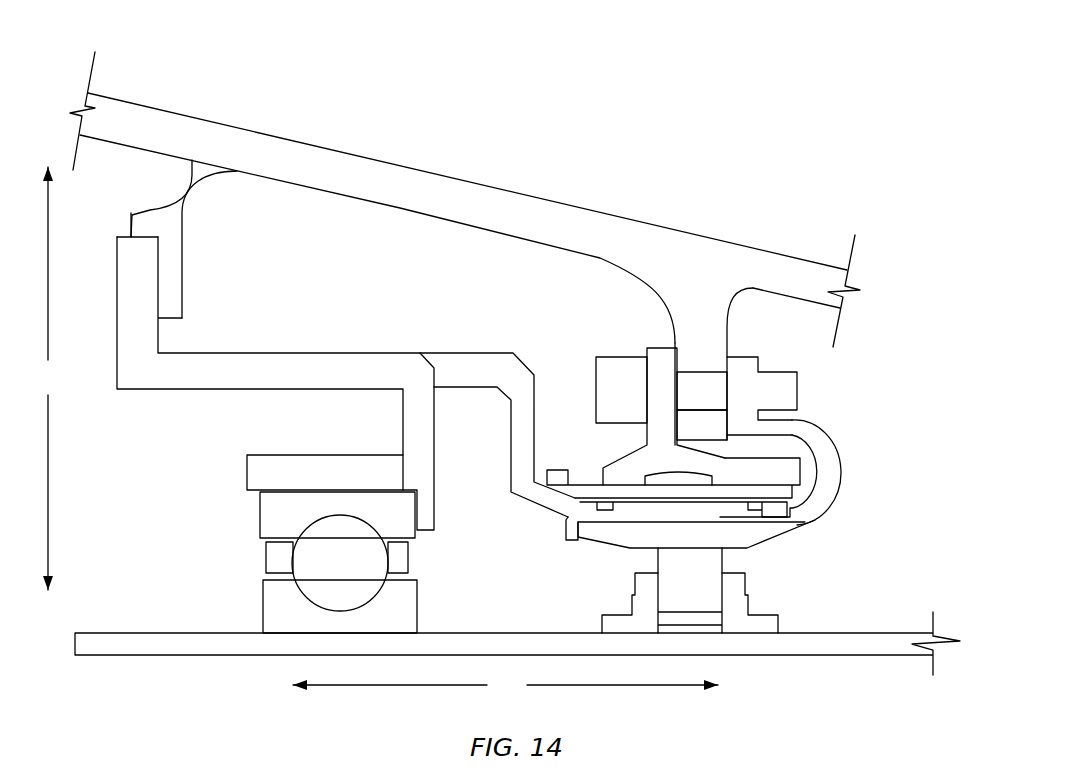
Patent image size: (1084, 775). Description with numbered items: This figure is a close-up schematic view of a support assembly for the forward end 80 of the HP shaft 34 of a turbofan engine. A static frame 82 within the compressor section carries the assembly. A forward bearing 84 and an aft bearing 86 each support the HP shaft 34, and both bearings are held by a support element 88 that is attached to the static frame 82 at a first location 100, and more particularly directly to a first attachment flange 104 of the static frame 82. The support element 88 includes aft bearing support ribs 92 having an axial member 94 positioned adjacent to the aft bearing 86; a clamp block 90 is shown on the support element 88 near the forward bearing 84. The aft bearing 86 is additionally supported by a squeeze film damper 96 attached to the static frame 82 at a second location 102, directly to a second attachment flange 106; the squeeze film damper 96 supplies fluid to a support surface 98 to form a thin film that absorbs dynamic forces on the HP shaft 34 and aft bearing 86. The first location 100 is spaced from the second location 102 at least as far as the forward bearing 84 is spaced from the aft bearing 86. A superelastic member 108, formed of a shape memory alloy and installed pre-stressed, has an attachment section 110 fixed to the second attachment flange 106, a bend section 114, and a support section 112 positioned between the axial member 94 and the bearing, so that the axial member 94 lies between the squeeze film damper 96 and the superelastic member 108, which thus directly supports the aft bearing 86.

The HP shaft 34 is at (785, 645).
The forward end 80 is at (207, 673).
The static frame 82 is at (488, 190).
The forward bearing 84 is at (254, 562).
The aft bearing 86 is at (806, 615).
The support element 88 is at (388, 296).
The clamp block 90 is at (383, 453).
The aft bearing support ribs 92 is at (525, 415).
The axial member 94 is at (572, 520).
The squeeze film damper 96 is at (773, 467).
The support surface 98 is at (718, 503).
The first location 100 is at (236, 212).
The second location 102 is at (752, 310).
The first attachment flange 104 is at (163, 217).
The second attachment flange 106 is at (698, 332).
The superelastic member 108 is at (824, 383).
The attachment section 110 is at (737, 370).
The support section 112 is at (703, 530).
The bend section 114 is at (812, 518).